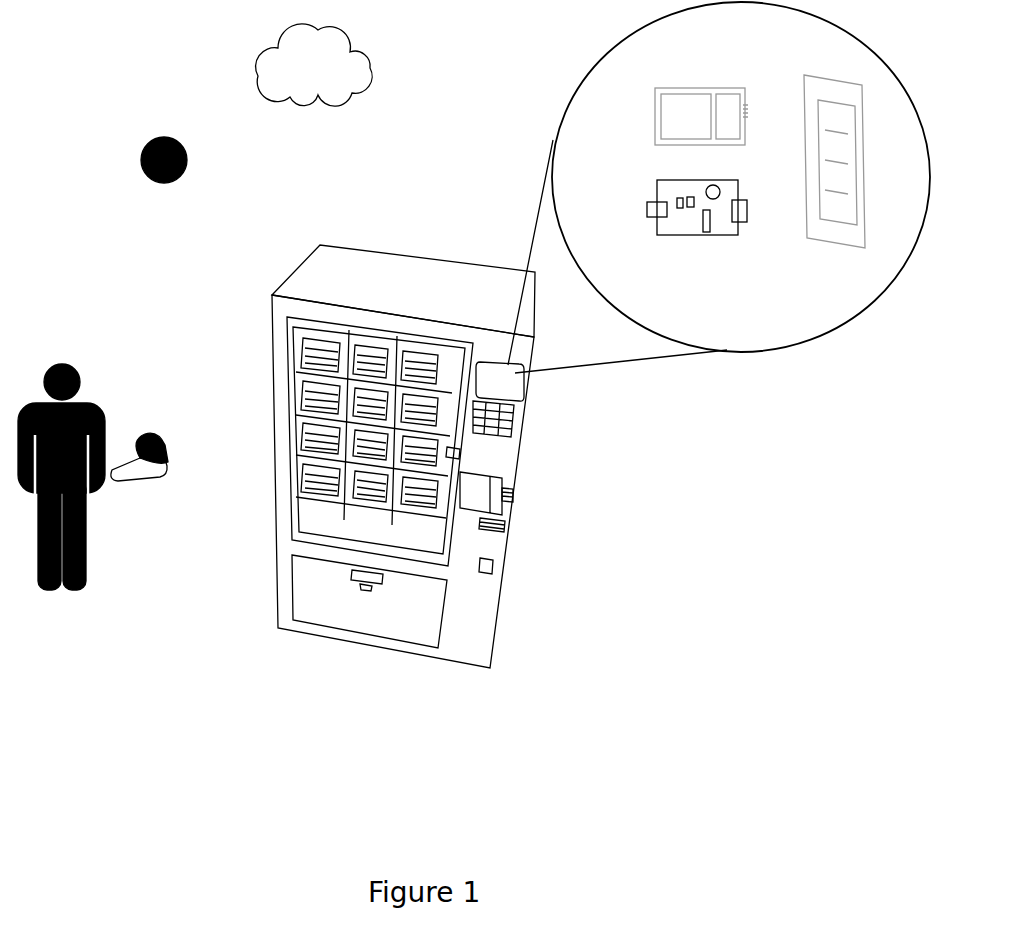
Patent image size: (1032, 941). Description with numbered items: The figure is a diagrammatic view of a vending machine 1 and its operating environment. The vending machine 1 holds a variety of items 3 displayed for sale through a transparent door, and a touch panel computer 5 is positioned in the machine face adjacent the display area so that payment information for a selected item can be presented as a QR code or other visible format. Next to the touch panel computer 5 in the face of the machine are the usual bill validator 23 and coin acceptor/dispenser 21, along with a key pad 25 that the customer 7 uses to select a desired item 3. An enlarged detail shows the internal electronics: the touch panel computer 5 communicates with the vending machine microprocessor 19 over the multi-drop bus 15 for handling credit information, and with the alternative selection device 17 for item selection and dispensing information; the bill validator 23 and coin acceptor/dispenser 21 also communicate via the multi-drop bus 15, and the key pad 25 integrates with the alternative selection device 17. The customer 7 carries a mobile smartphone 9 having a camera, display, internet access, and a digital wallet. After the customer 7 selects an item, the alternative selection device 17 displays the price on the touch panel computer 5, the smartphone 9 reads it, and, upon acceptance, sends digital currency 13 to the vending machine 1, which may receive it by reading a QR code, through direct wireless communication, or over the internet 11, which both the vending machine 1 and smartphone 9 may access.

The vending machine 1 is at (342, 260).
The items 3 is at (287, 322).
The touch panel computer 5 is at (498, 472).
The customer 7 is at (63, 363).
The mobile smartphone 9 is at (152, 463).
The internet 11 is at (255, 57).
The digital currency 13 is at (141, 163).
The multi-drop bus 15 is at (647, 208).
The alternative selection device 17 is at (657, 118).
The vending machine microprocessor 19 is at (857, 115).
The coin acceptor/dispenser 21 is at (514, 494).
The bill validator 23 is at (506, 526).
The key pad 25 is at (524, 400).